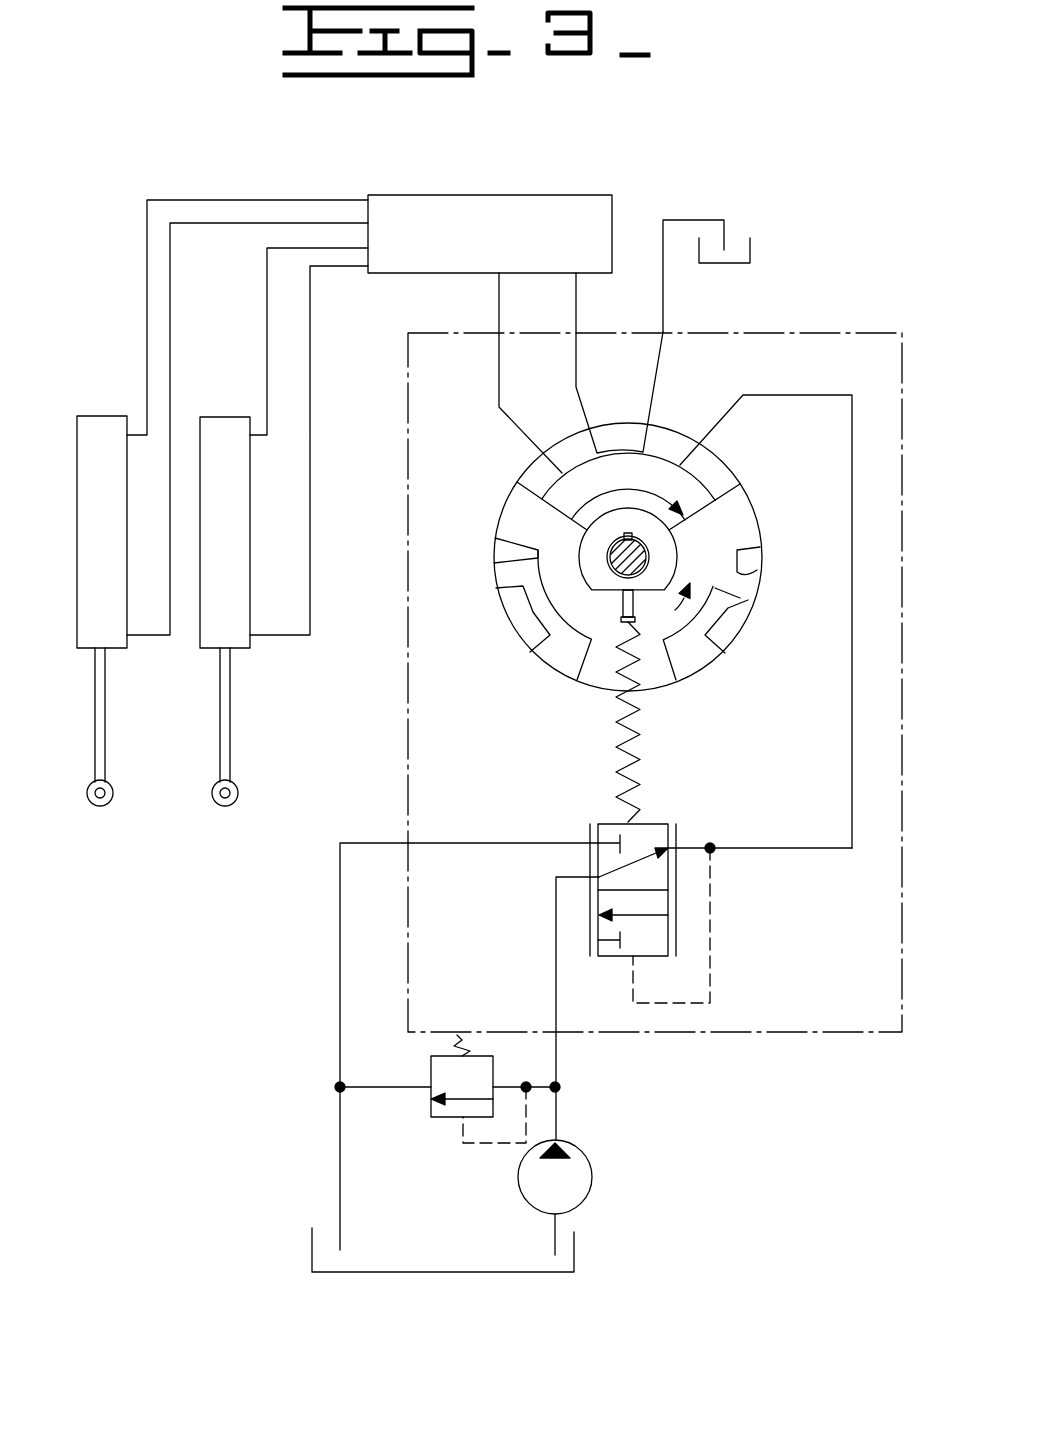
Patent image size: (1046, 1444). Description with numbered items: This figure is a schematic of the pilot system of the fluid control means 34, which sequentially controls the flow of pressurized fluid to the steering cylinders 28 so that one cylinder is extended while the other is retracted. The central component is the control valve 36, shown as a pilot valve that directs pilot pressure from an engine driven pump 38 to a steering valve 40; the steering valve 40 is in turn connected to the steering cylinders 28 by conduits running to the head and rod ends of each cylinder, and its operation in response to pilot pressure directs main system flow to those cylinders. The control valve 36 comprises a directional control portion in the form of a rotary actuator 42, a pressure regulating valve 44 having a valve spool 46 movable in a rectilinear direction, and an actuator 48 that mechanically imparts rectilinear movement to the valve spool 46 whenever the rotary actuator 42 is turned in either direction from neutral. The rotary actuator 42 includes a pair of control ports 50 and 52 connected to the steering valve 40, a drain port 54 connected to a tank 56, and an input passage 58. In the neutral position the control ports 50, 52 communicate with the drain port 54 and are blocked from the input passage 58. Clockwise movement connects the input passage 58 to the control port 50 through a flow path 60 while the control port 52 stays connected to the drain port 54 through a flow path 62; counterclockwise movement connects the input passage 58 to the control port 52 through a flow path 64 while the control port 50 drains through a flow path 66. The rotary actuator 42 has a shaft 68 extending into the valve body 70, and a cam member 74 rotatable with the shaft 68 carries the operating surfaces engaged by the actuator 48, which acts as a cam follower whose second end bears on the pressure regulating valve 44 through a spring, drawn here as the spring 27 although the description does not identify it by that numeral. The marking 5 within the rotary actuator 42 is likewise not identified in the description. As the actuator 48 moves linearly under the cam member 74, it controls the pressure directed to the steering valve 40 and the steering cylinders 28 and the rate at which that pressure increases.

The valve chamber 5 is at (628, 521).
The spring 27 is at (618, 737).
The steering cylinders 28 is at (97, 417).
The fluid control means 34 is at (832, 288).
The control valve 36 is at (872, 333).
The engine driven pump 38 is at (593, 1180).
The steering valve 40 is at (504, 249).
The rotary actuator 42 is at (760, 515).
The pressure regulating valve 44 is at (676, 897).
The valve spool 46 is at (668, 822).
The actuator 48 is at (633, 596).
The control port 50 is at (498, 338).
The control port 52 is at (577, 332).
The drain port 54 is at (666, 330).
The tank 56 is at (750, 248).
The input passage 58 is at (750, 396).
The flow path 60 is at (538, 558).
The flow path 62 is at (513, 623).
The flow path 64 is at (683, 645).
The flow path 66 is at (757, 570).
The shaft 68 is at (640, 543).
The valve body 70 is at (900, 940).
The cam member 74 is at (592, 545).